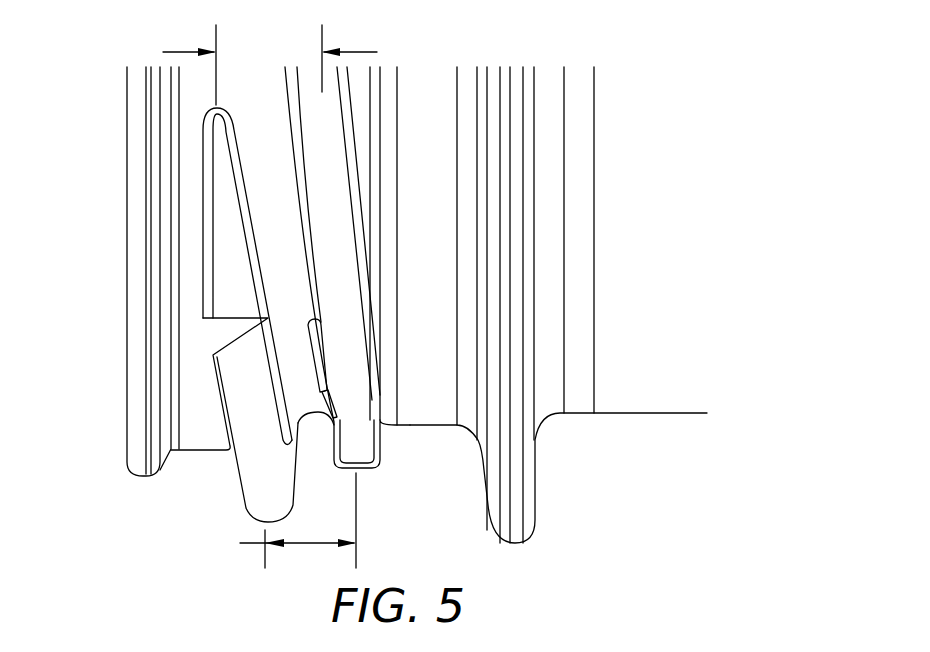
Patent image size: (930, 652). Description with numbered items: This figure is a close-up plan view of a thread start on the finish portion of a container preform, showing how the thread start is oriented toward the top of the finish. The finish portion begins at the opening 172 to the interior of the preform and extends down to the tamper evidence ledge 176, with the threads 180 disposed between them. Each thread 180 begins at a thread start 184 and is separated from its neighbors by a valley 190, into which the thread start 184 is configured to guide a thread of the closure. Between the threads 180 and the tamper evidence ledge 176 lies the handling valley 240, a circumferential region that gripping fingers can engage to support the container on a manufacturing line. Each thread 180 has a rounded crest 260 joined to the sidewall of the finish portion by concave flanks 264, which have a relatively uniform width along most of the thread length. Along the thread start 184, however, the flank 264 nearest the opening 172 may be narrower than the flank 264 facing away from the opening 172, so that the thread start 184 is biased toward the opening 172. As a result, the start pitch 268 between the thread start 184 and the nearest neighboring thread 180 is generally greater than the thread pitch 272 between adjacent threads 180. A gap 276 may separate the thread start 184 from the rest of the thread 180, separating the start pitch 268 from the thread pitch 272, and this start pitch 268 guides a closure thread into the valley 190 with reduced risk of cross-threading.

The opening 172 is at (89, 254).
The tamper evidence ledge 176 is at (535, 497).
The thread 180 is at (118, 482).
The thread start 184 is at (220, 148).
The valley 190 is at (282, 263).
The handling valley 240 is at (437, 426).
The rounded crest 260 is at (267, 523).
The concave flank 264 is at (243, 192).
The start pitch 268 is at (270, 65).
The thread pitch 272 is at (270, 520).
The gap 276 is at (233, 332).